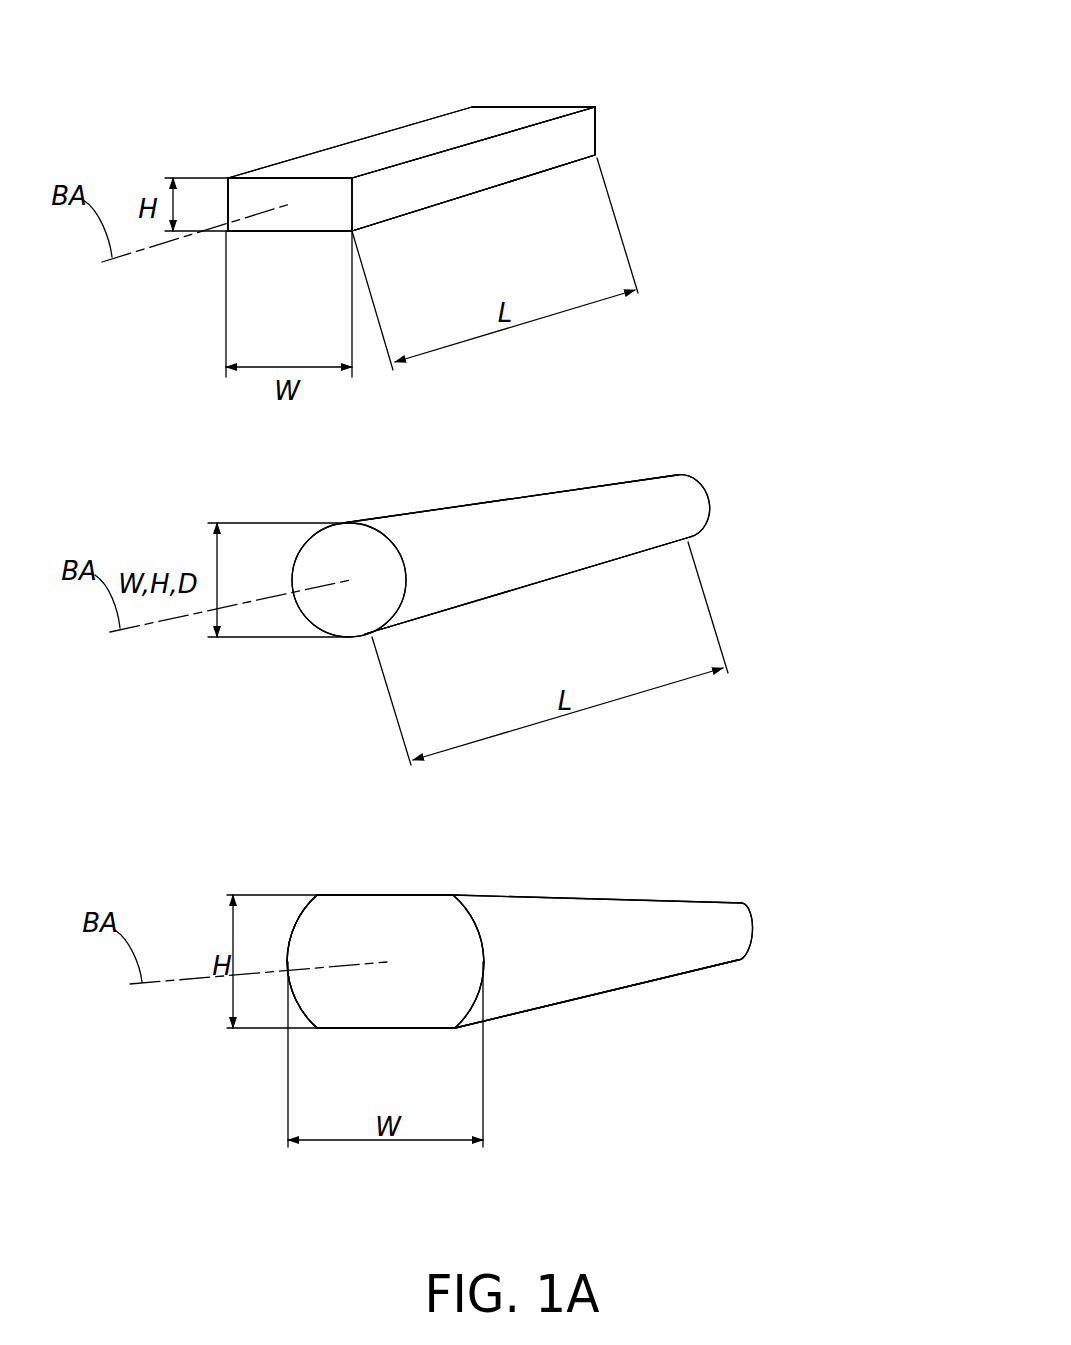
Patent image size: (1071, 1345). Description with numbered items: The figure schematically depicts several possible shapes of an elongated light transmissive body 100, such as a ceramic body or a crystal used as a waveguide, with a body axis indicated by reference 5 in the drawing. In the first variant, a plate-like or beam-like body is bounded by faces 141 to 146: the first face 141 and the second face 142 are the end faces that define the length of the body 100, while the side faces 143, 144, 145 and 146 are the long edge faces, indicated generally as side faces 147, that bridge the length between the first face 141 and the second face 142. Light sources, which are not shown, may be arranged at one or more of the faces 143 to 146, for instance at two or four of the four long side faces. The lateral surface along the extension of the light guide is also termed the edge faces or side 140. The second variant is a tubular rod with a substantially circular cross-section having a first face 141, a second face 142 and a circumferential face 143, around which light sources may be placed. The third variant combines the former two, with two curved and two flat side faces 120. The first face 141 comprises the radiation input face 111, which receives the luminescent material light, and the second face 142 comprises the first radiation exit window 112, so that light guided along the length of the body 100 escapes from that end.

The cross-section reference 5 is at (293, 115).
The light transmissive body 100 is at (638, 80).
The radiation input face 111 is at (573, 547).
The first radiation exit window 112 is at (262, 216).
The lateral surface 120 is at (553, 145).
The edge faces or side 140 is at (468, 125).
The first face 141 is at (613, 130).
The second face 142 is at (300, 212).
The face 143 is at (435, 183).
The face 144 is at (222, 213).
The face 145 is at (392, 227).
The face 146 is at (373, 150).
The side faces 147 is at (503, 42).